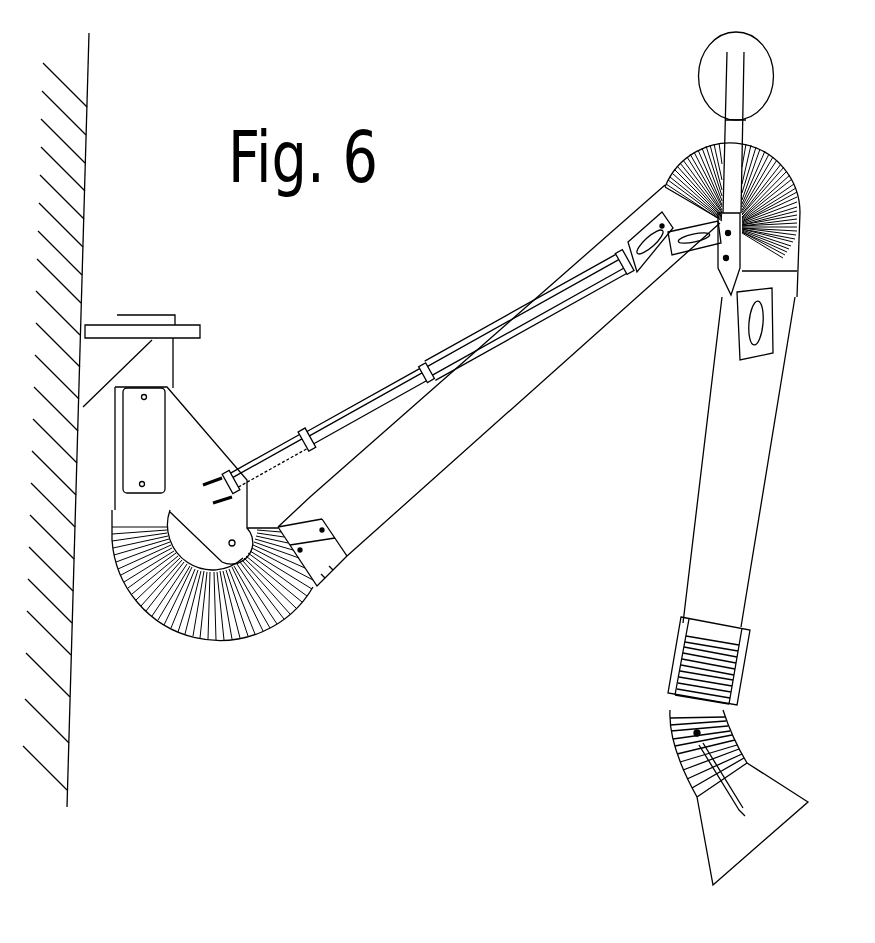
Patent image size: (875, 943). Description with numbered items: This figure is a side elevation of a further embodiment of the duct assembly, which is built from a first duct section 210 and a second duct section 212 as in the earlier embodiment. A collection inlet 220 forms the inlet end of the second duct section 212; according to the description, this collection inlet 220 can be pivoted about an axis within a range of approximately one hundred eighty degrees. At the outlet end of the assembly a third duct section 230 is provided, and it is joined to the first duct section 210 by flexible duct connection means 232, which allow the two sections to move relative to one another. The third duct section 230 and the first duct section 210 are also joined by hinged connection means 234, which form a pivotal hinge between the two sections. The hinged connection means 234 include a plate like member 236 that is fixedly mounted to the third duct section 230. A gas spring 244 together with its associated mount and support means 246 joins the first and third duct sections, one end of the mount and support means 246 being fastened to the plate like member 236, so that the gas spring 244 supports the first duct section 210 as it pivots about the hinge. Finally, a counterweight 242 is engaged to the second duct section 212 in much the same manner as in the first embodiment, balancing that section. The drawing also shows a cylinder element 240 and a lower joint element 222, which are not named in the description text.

The first duct section 210 is at (483, 425).
The second duct section 212 is at (700, 486).
The collection inlet 220 is at (700, 820).
The outlet elbow bellows 222 is at (673, 743).
The third duct section 230 is at (167, 370).
The flexible duct connection means 232 is at (193, 630).
The hinged connection means 234 is at (200, 433).
The plate like member 236 is at (205, 477).
The hydraulic cylinder 240 is at (299, 434).
The counterweight 242 is at (746, 125).
The gas spring 244 is at (423, 357).
The mount and support means 246 is at (645, 282).